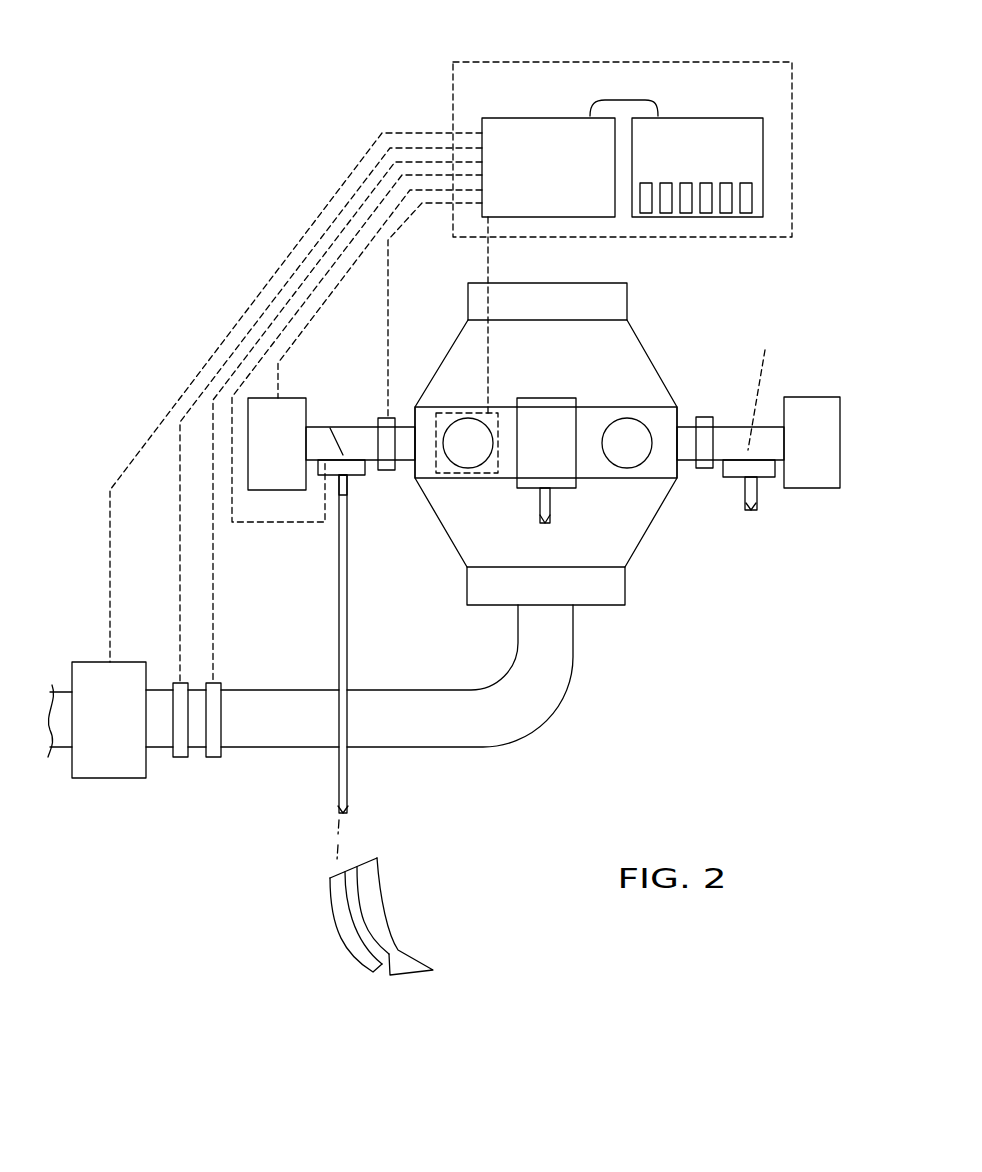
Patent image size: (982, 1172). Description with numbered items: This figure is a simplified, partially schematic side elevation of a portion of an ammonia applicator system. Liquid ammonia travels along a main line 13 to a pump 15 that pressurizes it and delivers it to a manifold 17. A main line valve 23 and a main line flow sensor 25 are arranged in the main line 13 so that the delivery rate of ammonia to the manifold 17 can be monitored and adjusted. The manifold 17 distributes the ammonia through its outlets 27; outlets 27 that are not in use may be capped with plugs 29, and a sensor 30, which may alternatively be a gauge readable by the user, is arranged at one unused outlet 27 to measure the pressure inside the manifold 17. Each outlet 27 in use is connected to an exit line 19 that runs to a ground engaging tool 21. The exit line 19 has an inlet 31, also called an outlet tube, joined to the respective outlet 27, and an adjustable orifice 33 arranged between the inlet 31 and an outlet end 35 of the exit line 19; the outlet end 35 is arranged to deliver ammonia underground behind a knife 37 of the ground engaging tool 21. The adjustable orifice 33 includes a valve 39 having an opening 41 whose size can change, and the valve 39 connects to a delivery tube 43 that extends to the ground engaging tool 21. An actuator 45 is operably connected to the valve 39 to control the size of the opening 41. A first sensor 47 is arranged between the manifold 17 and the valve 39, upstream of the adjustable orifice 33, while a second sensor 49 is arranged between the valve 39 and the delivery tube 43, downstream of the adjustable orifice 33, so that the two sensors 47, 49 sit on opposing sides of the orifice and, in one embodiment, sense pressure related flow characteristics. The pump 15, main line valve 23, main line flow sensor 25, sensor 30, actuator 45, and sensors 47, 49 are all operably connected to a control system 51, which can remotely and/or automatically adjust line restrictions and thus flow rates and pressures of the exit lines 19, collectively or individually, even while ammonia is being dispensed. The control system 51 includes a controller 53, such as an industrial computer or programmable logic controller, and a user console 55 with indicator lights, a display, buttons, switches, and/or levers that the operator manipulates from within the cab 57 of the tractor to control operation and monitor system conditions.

The main line 13 is at (547, 720).
The pump 15 is at (109, 720).
The manifold 17 is at (631, 297).
The exit line 19 is at (545, 358).
The ground engaging tool 21 is at (397, 890).
The main line valve 23 is at (180, 757).
The main line flow sensor 25 is at (213, 757).
The outlet 27 is at (418, 437).
The plug 29 is at (626, 452).
The sensor 30 is at (512, 413).
The inlet 31 is at (398, 428).
The adjustable orifice 33 is at (550, 398).
The outlet end 35 is at (332, 923).
The knife 37 is at (410, 948).
The valve 39 is at (372, 470).
The opening 41 is at (331, 427).
The delivery tube 43 is at (553, 503).
The actuator 45 is at (275, 490).
The first sensor 47 is at (392, 470).
The second sensor 49 is at (352, 478).
The control system 51 is at (625, 100).
The controller 53 is at (548, 167).
The user console 55 is at (697, 167).
The cab 57 is at (716, 76).